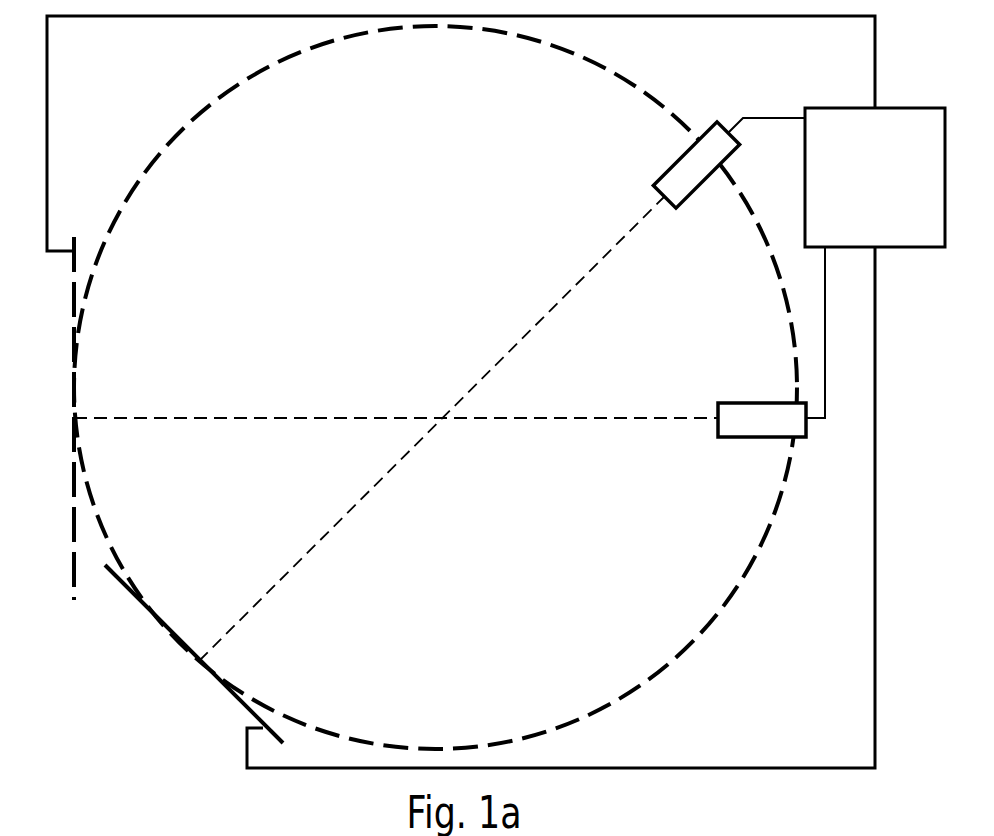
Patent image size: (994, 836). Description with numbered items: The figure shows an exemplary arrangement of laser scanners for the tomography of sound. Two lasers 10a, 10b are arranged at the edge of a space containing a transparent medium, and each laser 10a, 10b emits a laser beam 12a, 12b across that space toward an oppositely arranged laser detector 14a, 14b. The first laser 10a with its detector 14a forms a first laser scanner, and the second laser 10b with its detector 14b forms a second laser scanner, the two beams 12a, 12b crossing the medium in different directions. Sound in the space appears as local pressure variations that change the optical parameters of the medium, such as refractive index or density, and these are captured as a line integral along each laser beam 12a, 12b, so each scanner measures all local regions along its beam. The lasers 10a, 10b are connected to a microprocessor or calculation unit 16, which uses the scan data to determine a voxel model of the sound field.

The laser 10a is at (670, 163).
The laser 10b is at (760, 402).
The laser beam 12a is at (565, 295).
The laser beam 12b is at (613, 418).
The laser detector 14a is at (118, 583).
The laser detector 14b is at (74, 600).
The calculation unit 16 is at (925, 247).